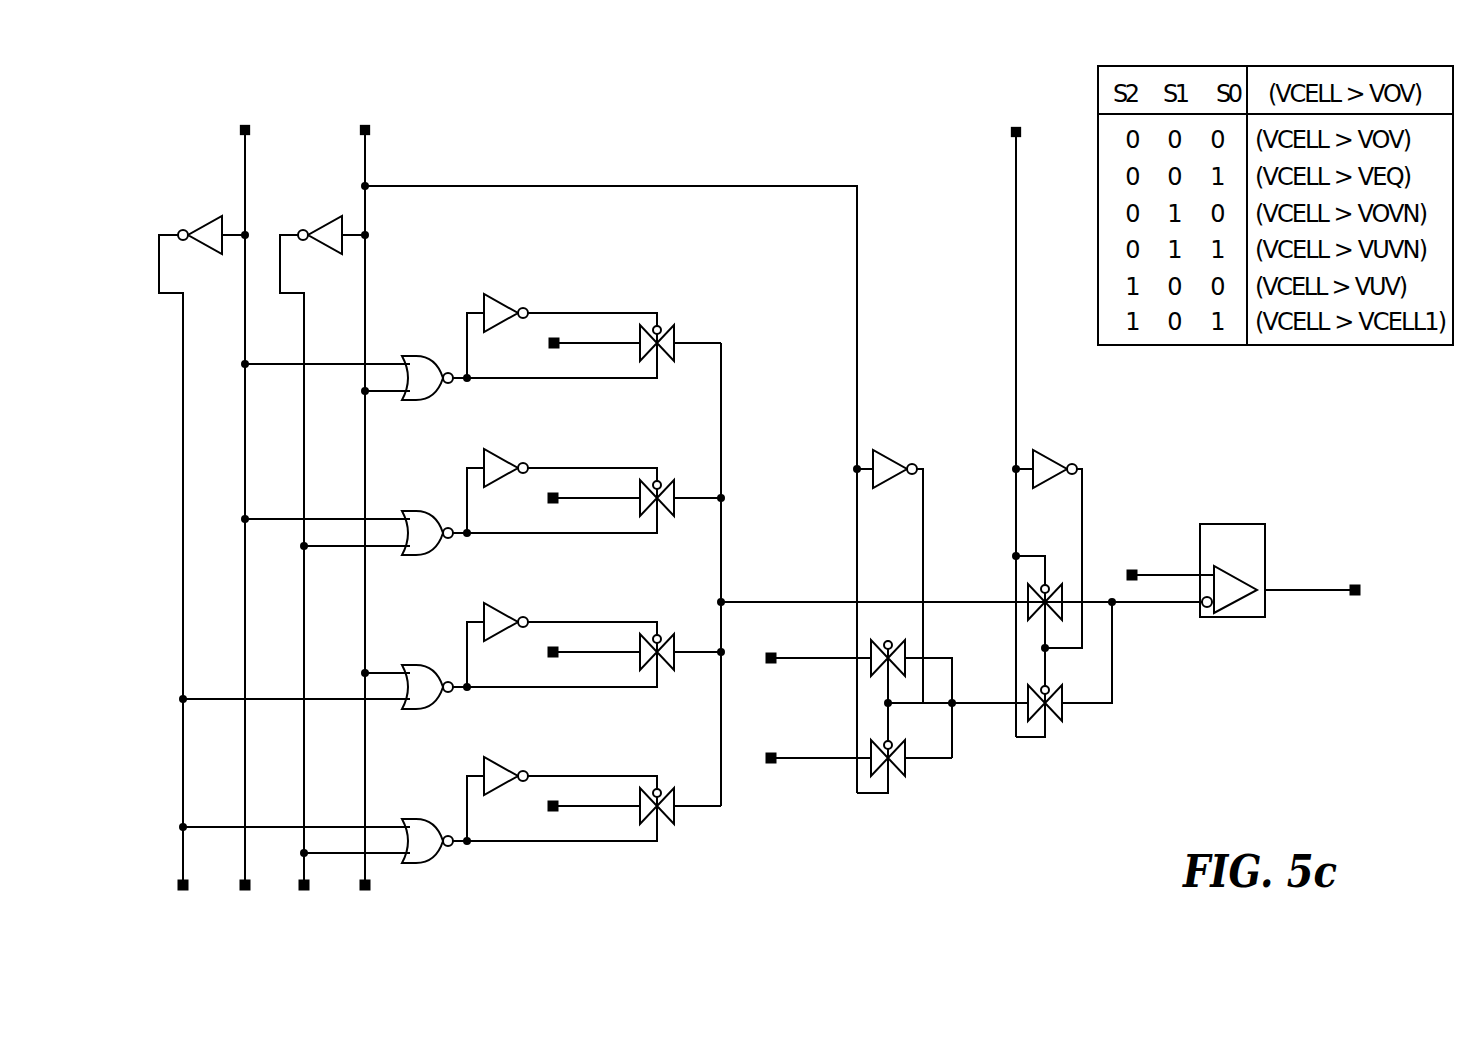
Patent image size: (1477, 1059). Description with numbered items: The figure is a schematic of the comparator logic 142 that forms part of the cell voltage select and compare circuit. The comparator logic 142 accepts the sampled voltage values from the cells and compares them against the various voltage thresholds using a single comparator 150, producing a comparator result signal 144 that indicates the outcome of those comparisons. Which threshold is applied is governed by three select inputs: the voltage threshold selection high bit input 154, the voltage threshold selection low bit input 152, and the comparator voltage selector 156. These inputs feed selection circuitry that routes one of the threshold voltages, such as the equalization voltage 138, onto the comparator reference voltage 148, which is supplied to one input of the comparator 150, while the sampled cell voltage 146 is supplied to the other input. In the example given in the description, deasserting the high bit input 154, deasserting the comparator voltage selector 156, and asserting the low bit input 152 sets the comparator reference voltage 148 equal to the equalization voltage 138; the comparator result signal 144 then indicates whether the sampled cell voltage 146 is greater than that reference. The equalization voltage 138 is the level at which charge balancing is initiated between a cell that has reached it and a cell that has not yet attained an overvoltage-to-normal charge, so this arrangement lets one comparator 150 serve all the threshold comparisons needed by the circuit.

The equalization voltage 138 is at (552, 493).
The comparator logic 142 is at (1370, 755).
The comparator result signal 144 is at (1285, 592).
The sampled cell voltage 146 is at (1132, 571).
The comparator reference voltage 148 is at (1145, 606).
The comparator 150 is at (1265, 532).
The voltage threshold selection low bit input 152 is at (370, 130).
The voltage threshold selection high bit input 154 is at (241, 130).
The comparator voltage selector 156 is at (1012, 132).